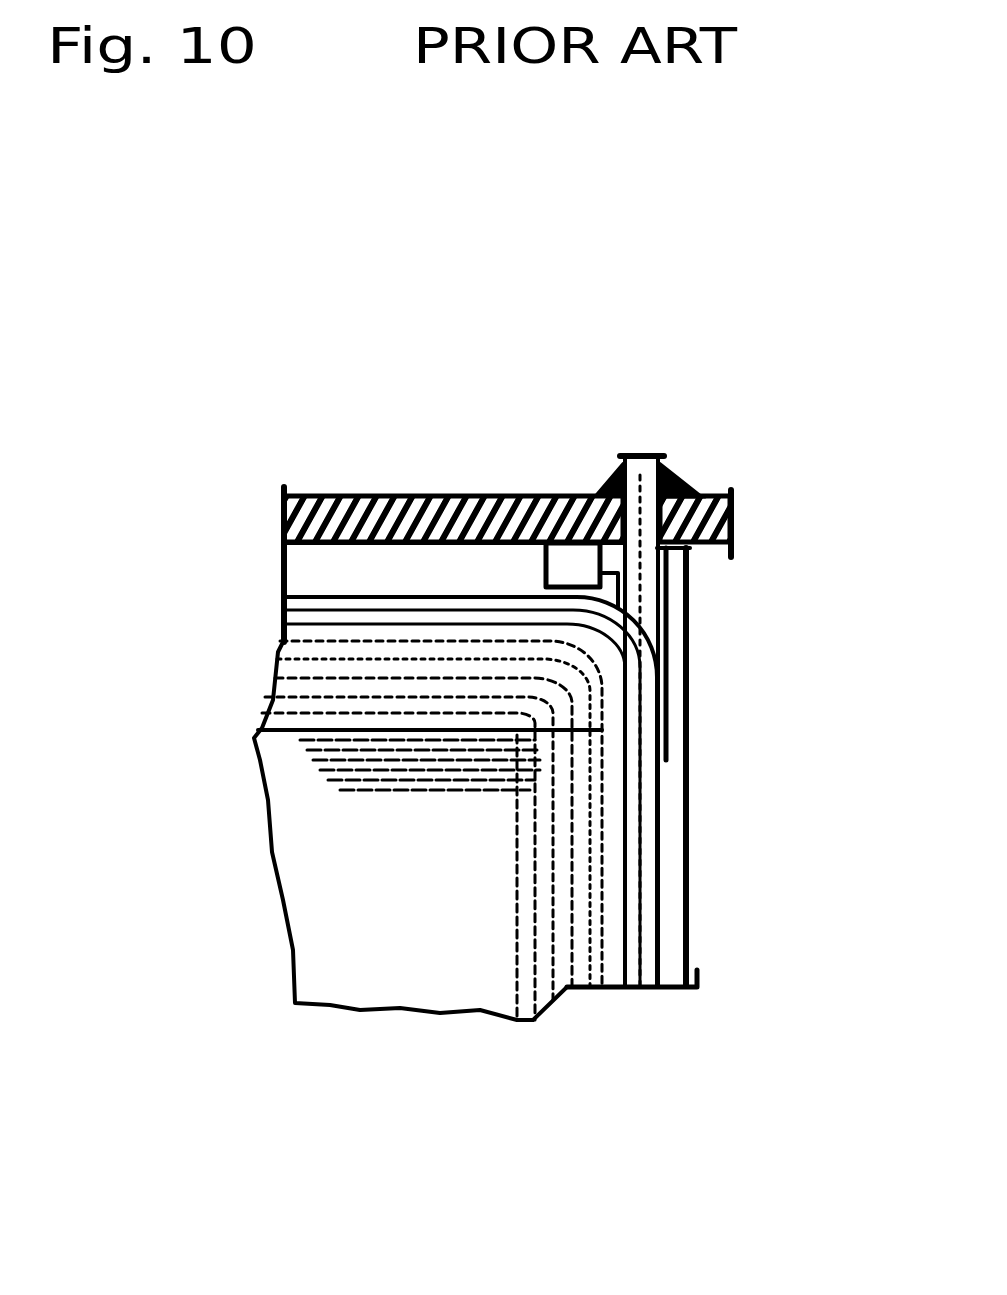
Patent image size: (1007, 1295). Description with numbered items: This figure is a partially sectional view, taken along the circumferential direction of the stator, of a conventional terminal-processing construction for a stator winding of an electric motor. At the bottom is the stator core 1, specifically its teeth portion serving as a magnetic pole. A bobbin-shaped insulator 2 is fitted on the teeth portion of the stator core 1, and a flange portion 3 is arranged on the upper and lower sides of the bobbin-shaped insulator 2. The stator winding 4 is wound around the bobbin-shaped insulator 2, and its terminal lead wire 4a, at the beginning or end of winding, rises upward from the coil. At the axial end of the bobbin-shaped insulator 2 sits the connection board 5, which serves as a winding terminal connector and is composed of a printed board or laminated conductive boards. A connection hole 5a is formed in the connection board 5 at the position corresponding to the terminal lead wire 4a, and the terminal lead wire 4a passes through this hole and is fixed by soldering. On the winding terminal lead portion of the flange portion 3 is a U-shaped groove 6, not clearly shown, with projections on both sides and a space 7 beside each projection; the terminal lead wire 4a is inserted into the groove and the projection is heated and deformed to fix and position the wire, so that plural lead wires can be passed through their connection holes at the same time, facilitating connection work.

The stator core 1 is at (318, 850).
The bobbin-shaped insulator 2 is at (688, 762).
The flange portion 3 is at (323, 569).
The stator winding 4 is at (613, 970).
The terminal lead wire 4a is at (645, 452).
The connection board 5 is at (323, 495).
The connection hole 5a is at (731, 531).
The U-shaped groove 6 is at (672, 567).
The space 7 is at (577, 560).